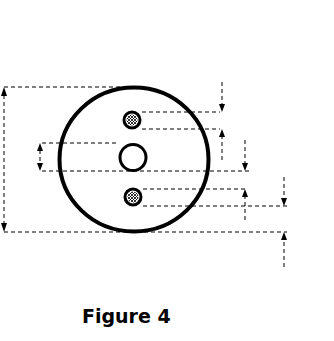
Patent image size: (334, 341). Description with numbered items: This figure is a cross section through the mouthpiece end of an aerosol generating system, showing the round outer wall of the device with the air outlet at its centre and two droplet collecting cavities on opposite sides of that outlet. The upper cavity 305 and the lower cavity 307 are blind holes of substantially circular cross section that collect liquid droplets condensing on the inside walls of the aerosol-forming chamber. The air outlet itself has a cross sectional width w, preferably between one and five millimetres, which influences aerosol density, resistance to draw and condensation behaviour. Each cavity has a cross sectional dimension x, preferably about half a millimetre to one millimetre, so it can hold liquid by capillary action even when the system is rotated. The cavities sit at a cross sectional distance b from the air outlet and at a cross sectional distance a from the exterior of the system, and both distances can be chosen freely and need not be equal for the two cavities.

The upper cavity 305 is at (129, 111).
The lower cavity 307 is at (128, 205).
The cross sectional width of the air outlet w is at (134, 157).
The cross sectional dimension of the cavities x is at (191, 121).
The cross sectional distance from the air outlet b is at (206, 180).
The cross sectional distance from the exterior a is at (223, 222).